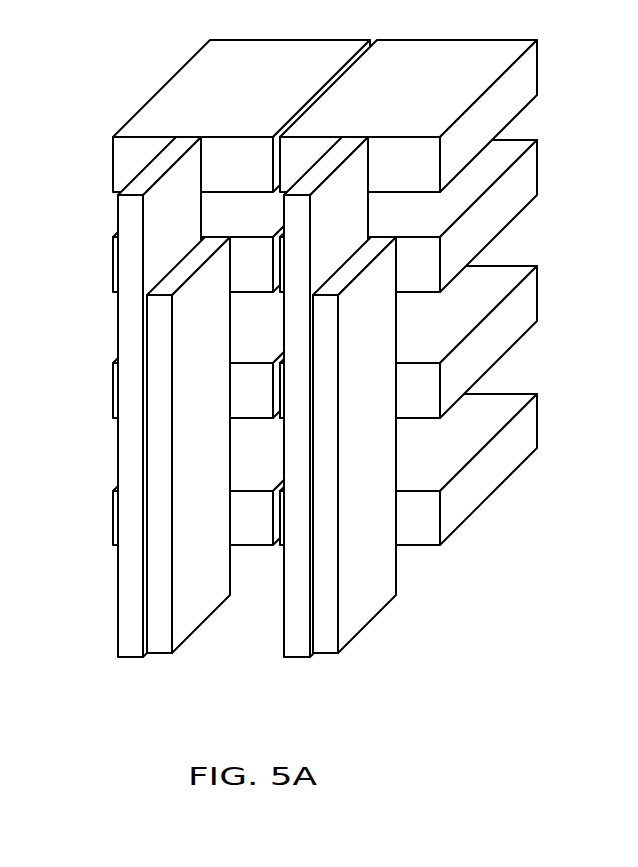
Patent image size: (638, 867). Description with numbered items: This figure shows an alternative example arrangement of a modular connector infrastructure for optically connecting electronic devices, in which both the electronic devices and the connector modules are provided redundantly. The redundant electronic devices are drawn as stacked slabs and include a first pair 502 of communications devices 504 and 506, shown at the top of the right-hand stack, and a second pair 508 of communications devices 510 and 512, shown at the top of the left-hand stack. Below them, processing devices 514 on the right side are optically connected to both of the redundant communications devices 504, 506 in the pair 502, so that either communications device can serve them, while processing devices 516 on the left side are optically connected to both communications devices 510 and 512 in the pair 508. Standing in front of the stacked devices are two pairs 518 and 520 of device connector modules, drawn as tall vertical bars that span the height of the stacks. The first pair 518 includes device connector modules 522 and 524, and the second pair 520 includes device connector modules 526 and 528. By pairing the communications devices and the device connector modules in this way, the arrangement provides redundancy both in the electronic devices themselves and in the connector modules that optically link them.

The first pair of communications devices 502 is at (459, 166).
The communications device 504 is at (595, 192).
The communications device 506 is at (517, 177).
The second pair of communications devices 508 is at (200, 190).
The communications device 510 is at (235, 116).
The communications device 512 is at (112, 293).
The processing devices 514 is at (537, 295).
The processing devices 516 is at (112, 395).
The first pair of device connector modules 518 is at (142, 437).
The second pair of device connector modules 520 is at (308, 437).
The device connector module 522 is at (145, 657).
The device connector module 524 is at (187, 478).
The device connector module 526 is at (310, 657).
The device connector module 528 is at (353, 478).